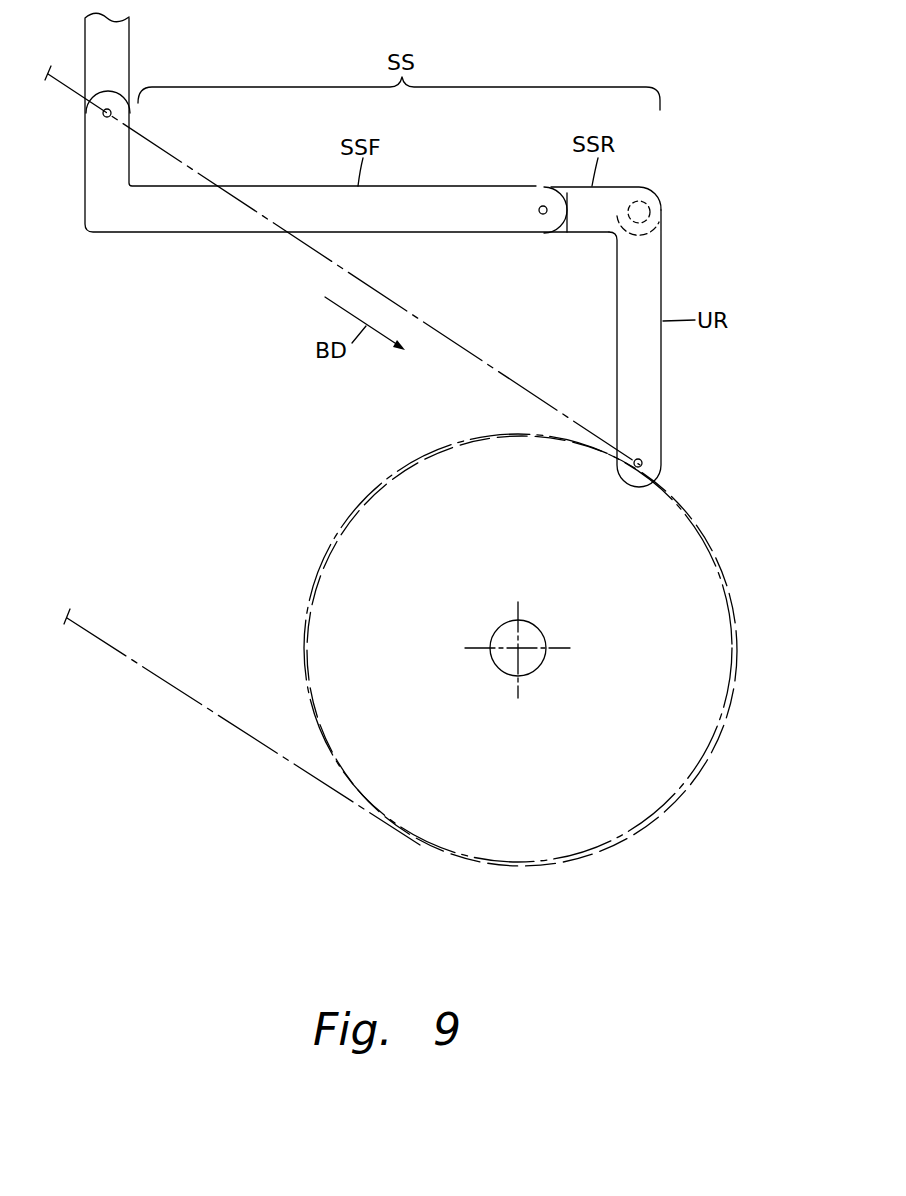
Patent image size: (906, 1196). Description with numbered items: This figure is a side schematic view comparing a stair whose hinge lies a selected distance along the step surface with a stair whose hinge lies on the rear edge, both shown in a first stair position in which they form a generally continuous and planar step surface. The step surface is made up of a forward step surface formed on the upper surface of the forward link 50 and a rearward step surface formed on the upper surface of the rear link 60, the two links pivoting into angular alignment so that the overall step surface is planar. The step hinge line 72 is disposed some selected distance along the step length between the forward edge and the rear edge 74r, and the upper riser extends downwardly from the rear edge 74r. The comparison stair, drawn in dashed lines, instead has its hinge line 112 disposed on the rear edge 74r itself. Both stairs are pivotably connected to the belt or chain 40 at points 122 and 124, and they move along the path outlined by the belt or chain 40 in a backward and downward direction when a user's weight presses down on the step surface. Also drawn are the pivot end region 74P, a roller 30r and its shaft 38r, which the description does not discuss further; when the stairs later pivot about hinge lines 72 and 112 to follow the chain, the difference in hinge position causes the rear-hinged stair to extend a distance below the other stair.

The forward link 50 is at (293, 178).
The rear link 60 is at (667, 362).
The pivot end 74P is at (134, 181).
The pivot point 122 is at (112, 114).
The step hinge line 72 is at (540, 206).
The rear edge 74r is at (664, 191).
The hinge line 112 is at (648, 215).
The pivot point 124 is at (645, 462).
The belt or chain 40 is at (484, 366).
The roll 30r is at (398, 466).
The roll shaft 38r is at (502, 630).